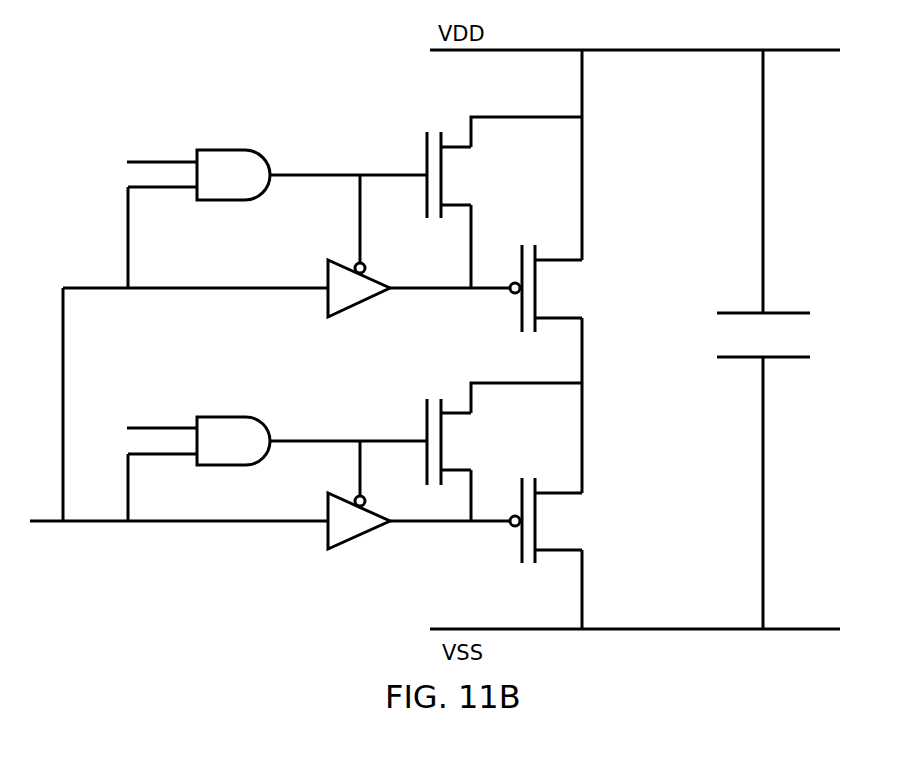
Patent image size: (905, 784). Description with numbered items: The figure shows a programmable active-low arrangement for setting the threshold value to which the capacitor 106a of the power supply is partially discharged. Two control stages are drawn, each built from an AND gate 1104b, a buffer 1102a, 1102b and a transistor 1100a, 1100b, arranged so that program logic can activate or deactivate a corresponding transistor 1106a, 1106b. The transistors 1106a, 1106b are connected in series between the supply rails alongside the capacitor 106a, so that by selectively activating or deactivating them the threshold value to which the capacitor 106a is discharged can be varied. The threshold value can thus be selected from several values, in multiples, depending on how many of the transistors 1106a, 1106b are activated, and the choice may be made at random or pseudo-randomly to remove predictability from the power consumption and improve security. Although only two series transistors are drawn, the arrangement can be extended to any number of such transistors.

The AND gate 1104b is at (227, 150).
The transistor 1100a is at (427, 153).
The transistor 1100b is at (427, 418).
The buffer 1102a is at (356, 306).
The buffer 1102b is at (356, 538).
The transistor 1106a is at (566, 262).
The transistor 1106b is at (566, 495).
The capacitor 106a is at (790, 359).